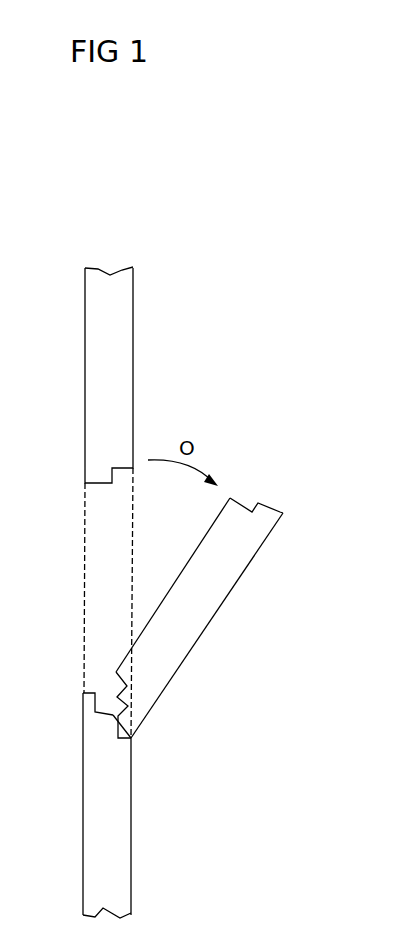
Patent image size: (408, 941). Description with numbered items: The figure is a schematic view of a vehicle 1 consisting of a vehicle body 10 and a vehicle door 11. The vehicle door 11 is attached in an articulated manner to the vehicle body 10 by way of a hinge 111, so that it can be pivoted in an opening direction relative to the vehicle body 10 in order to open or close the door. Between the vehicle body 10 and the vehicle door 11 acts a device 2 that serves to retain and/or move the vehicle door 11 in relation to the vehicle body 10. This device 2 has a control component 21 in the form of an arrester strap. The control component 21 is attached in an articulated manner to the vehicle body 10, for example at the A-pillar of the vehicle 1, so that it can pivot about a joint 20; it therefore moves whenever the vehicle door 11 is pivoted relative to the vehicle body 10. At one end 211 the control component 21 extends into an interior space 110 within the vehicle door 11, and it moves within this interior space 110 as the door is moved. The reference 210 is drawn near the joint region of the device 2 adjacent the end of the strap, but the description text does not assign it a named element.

The vehicle 1 is at (150, 272).
The vehicle body 10 is at (112, 378).
The vehicle door 11 is at (228, 572).
The interior space 110 is at (250, 542).
The hinge 111 is at (131, 738).
The device 2 is at (102, 668).
The joint 20 is at (113, 714).
The control component 21 is at (130, 696).
The notch tip 210 is at (110, 728).
The end 211 is at (137, 690).